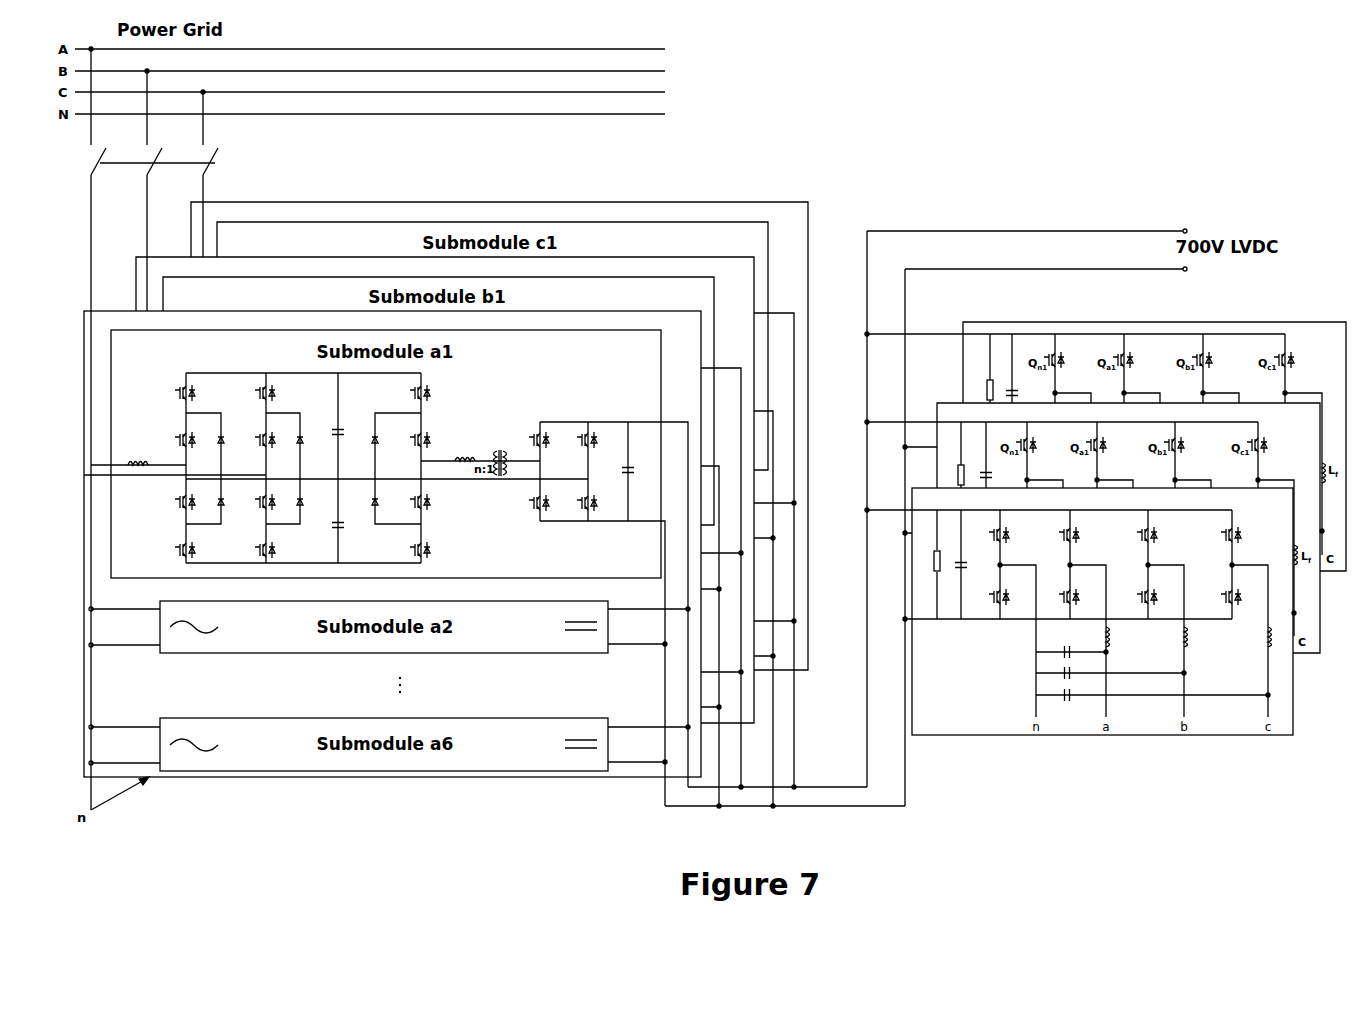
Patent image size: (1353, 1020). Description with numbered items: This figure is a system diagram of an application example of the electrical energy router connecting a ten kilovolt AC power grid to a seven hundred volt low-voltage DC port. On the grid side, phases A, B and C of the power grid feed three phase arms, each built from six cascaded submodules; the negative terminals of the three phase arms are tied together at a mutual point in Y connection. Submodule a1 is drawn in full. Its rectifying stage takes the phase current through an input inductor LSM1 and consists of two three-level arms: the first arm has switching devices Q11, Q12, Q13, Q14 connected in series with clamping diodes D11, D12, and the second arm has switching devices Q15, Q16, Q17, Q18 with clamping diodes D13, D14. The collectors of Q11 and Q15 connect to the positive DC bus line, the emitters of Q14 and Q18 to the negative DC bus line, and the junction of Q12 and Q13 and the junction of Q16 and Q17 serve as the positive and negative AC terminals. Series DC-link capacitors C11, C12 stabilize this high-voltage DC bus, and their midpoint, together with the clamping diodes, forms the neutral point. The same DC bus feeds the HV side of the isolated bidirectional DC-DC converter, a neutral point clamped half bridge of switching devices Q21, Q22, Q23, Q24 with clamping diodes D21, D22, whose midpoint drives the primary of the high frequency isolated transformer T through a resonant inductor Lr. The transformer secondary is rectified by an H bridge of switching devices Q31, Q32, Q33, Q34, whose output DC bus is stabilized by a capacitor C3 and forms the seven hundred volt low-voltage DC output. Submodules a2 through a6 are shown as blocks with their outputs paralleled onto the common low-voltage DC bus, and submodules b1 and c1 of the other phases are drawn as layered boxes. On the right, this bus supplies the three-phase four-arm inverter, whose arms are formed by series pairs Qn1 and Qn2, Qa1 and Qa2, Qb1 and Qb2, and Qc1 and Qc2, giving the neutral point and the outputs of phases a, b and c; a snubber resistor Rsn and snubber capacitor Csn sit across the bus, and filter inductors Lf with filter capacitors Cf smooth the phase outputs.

The submodule input inductor LSM1 is at (138, 455).
The switching device Q11 is at (175, 395).
The switching device Q12 is at (175, 442).
The switching device Q13 is at (175, 504).
The switching device Q14 is at (175, 553).
The switching device Q15 is at (256, 395).
The switching device Q16 is at (256, 442).
The switching device Q17 is at (256, 504).
The switching device Q18 is at (256, 553).
The silicon carbide switching device Q21 is at (411, 395).
The silicon carbide switching device Q22 is at (411, 442).
The silicon carbide switching device Q23 is at (411, 504).
The silicon carbide switching device Q24 is at (411, 553).
The silicon carbide switching device Q31 is at (531, 442).
The silicon carbide switching device Q32 is at (531, 505).
The silicon carbide switching device Q33 is at (579, 442).
The silicon carbide switching device Q34 is at (579, 505).
The clamping diode D11 is at (213, 433).
The clamping diode D12 is at (213, 510).
The clamping diode D13 is at (292, 433).
The clamping diode D14 is at (292, 510).
The silicon carbide clamping diode D21 is at (365, 437).
The silicon carbide clamping diode D22 is at (365, 508).
The DC-link capacitor C11 is at (330, 422).
The DC-link capacitor C12 is at (330, 537).
The output capacitor C3 is at (620, 471).
The resonant inductor Lr is at (462, 468).
The high frequency isolated transformer T is at (505, 463).
The switching device Qn1 is at (991, 537).
The switching device Qa1 is at (1061, 537).
The switching device Qb1 is at (1139, 537).
The switching device Qc1 is at (1223, 537).
The switching device Qn2 is at (991, 599).
The switching device Qa2 is at (1061, 599).
The switching device Qb2 is at (1139, 599).
The switching device Qc2 is at (1223, 599).
The snubber resistor Rsn is at (927, 564).
The snubber capacitor Csn is at (969, 577).
The filter inductor Lf is at (1196, 637).
The filter capacitor Cf is at (1152, 665).